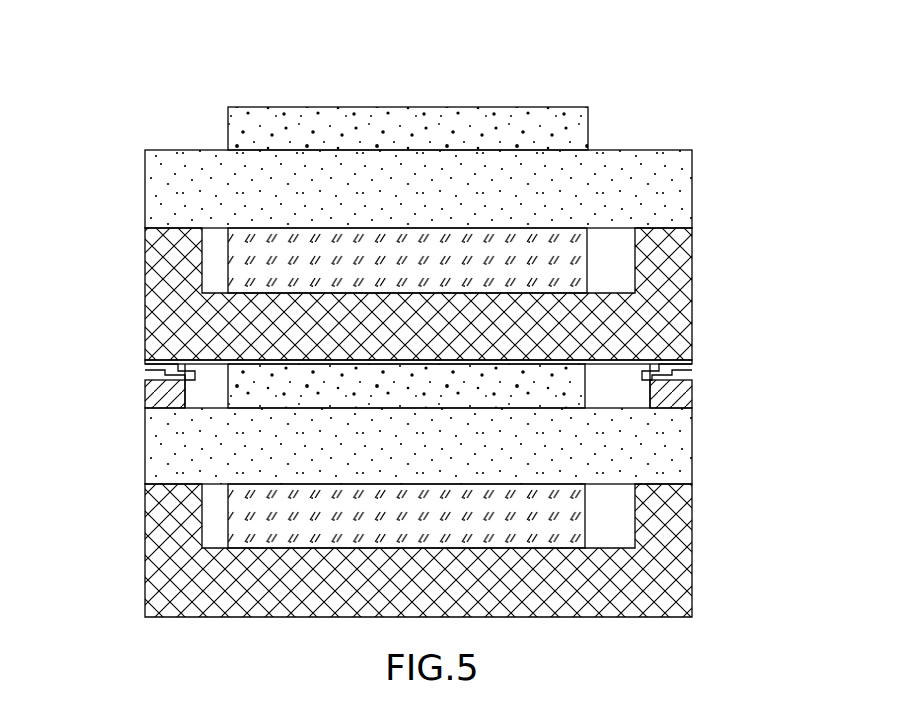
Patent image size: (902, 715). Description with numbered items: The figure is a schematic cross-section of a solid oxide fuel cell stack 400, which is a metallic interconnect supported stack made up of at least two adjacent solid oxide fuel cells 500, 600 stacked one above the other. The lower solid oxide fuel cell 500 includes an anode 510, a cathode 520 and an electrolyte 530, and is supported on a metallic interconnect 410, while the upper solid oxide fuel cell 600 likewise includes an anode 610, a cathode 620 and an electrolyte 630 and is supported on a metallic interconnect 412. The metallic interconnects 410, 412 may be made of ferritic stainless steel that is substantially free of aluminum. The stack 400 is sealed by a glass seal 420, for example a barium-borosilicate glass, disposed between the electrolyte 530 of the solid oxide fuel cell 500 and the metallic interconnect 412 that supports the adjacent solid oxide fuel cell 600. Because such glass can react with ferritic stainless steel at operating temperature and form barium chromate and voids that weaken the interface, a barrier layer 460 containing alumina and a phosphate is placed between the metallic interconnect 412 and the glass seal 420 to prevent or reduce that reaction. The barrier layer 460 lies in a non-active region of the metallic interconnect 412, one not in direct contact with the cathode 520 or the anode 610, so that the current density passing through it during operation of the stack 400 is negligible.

The solid oxide fuel cell stack 400 is at (190, 39).
The metallic interconnect 410 is at (692, 595).
The metallic interconnect 412 is at (693, 320).
The glass seal 420 is at (692, 395).
The barrier layer 460 is at (692, 365).
The solid oxide fuel cell 500 is at (125, 363).
The anode 510 is at (585, 530).
The cathode 520 is at (585, 393).
The electrolyte 530 is at (692, 460).
The solid oxide fuel cell 600 is at (122, 102).
The anode 610 is at (587, 270).
The cathode 620 is at (590, 133).
The electrolyte 630 is at (693, 197).